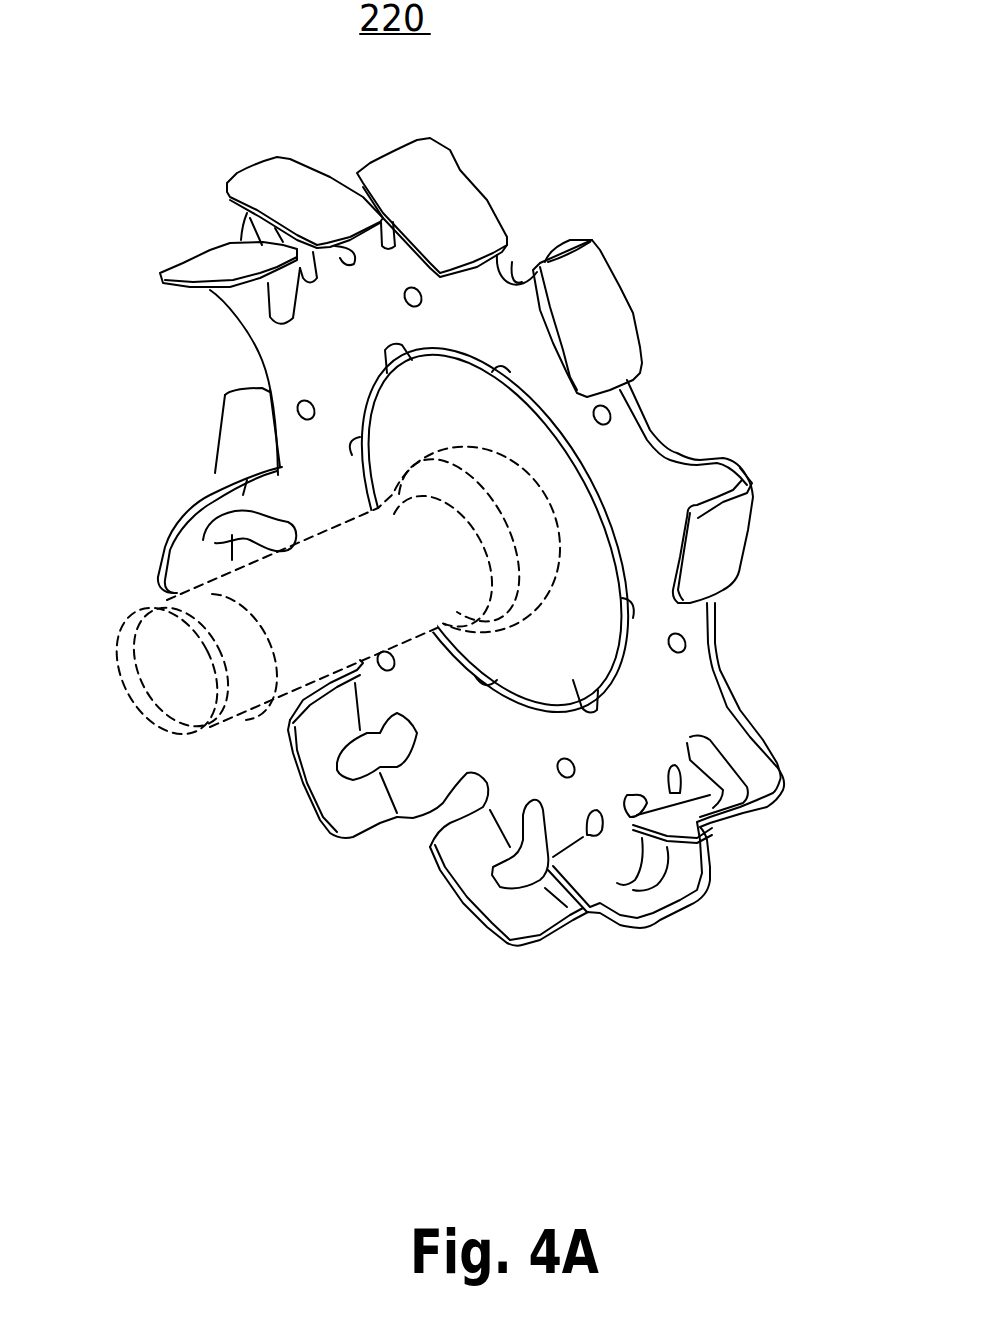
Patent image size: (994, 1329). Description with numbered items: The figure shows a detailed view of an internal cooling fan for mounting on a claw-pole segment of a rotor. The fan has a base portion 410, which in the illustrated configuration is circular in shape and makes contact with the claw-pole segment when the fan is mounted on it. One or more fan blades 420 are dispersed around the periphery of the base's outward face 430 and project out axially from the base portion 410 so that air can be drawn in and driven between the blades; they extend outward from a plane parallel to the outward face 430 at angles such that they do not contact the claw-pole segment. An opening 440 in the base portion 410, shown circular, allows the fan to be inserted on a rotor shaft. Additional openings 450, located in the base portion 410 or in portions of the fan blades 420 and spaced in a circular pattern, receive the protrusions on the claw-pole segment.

The base portion 410 is at (717, 660).
The fan blades 420 is at (603, 302).
The outward face 430 is at (293, 343).
The opening 440 is at (578, 552).
The openings 450 is at (612, 407).